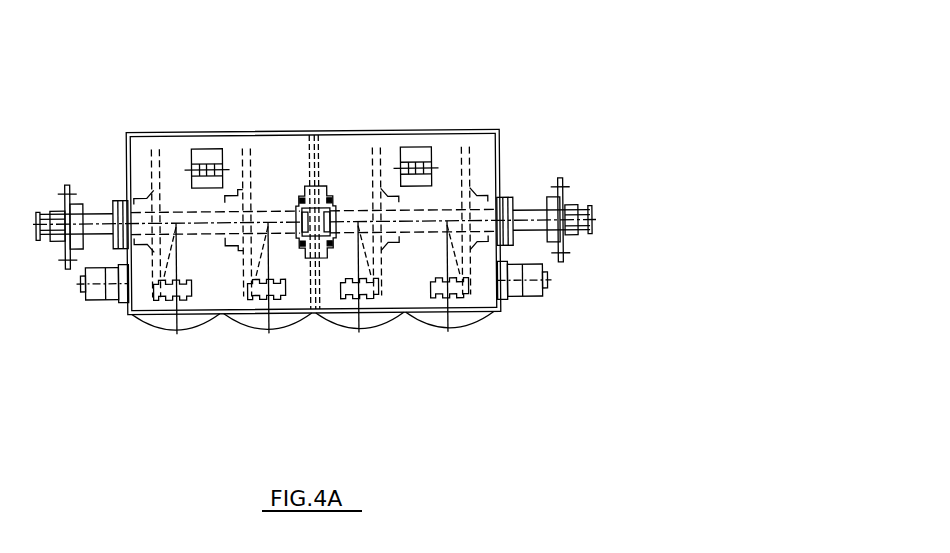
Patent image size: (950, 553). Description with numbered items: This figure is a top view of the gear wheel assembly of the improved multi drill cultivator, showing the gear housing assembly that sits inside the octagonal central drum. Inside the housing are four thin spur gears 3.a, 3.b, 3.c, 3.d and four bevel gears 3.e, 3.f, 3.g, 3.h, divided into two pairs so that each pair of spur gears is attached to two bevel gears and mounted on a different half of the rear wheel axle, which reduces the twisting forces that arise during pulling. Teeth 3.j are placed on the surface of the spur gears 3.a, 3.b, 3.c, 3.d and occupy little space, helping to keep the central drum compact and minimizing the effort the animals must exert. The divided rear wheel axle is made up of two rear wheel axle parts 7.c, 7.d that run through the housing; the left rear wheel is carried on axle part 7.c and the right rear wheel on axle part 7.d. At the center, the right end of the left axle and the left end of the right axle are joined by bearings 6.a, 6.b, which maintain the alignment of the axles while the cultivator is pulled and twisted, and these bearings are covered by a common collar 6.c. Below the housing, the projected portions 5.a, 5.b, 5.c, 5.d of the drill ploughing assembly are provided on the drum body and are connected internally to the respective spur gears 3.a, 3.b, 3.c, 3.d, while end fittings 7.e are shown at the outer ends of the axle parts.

The spur gear 3.a is at (145, 196).
The spur gear 3.b is at (233, 188).
The spur gear 3.c is at (381, 207).
The spur gear 3.d is at (472, 168).
The bevel gear 3.e is at (168, 299).
The bevel gear 3.f is at (260, 299).
The bevel gear 3.g is at (352, 299).
The bevel gear 3.h is at (438, 299).
The teeth 3.j is at (155, 172).
The projected portion 5.a is at (185, 327).
The projected portion 5.b is at (285, 327).
The projected portion 5.c is at (383, 327).
The projected portion 5.d is at (468, 323).
The bearing 6.a is at (300, 194).
The bearing 6.b is at (328, 197).
The common collar 6.c is at (311, 136).
The rear wheel axle part 7.c is at (183, 210).
The rear wheel axle part 7.d is at (352, 208).
The shaft end bearing 7.e is at (53, 250).